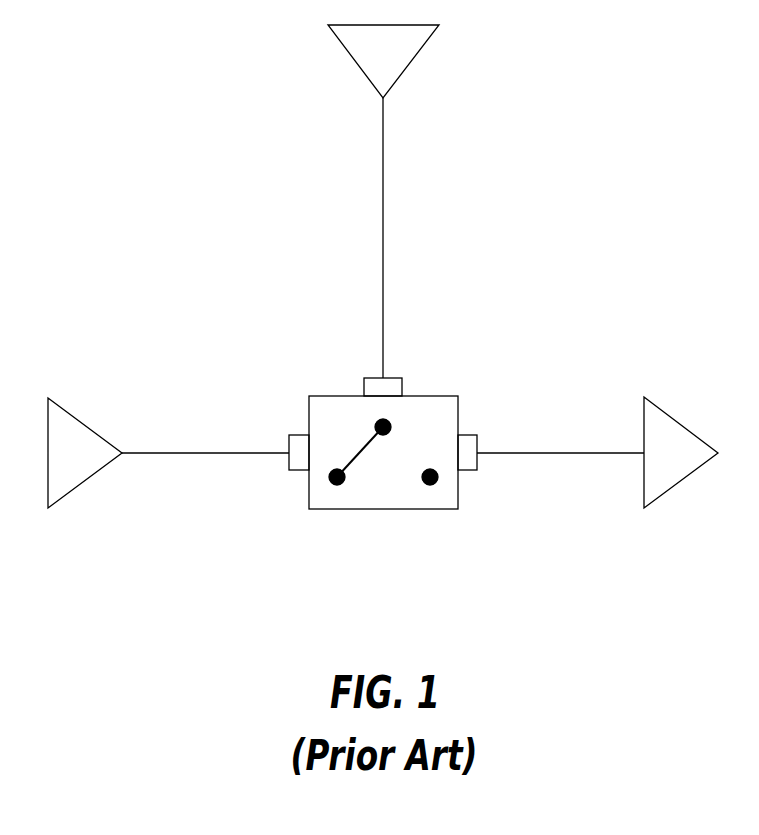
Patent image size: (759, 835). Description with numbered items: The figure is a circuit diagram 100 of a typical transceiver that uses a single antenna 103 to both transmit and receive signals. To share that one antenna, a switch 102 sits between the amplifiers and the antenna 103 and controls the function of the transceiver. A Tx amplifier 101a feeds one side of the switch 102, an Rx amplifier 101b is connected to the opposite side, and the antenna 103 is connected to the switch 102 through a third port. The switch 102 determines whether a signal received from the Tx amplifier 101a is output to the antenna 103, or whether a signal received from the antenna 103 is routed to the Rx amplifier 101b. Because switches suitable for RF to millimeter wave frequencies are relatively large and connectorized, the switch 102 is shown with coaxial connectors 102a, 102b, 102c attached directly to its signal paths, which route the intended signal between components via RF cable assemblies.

The circuit diagram 100 is at (140, 194).
The Tx amplifier 101a is at (70, 493).
The Rx amplifier 101b is at (663, 495).
The switch 102 is at (383, 509).
The coaxial connector 102a is at (288, 434).
The coaxial connector 102b is at (403, 377).
The coaxial connector 102c is at (478, 472).
The antenna 103 is at (413, 62).